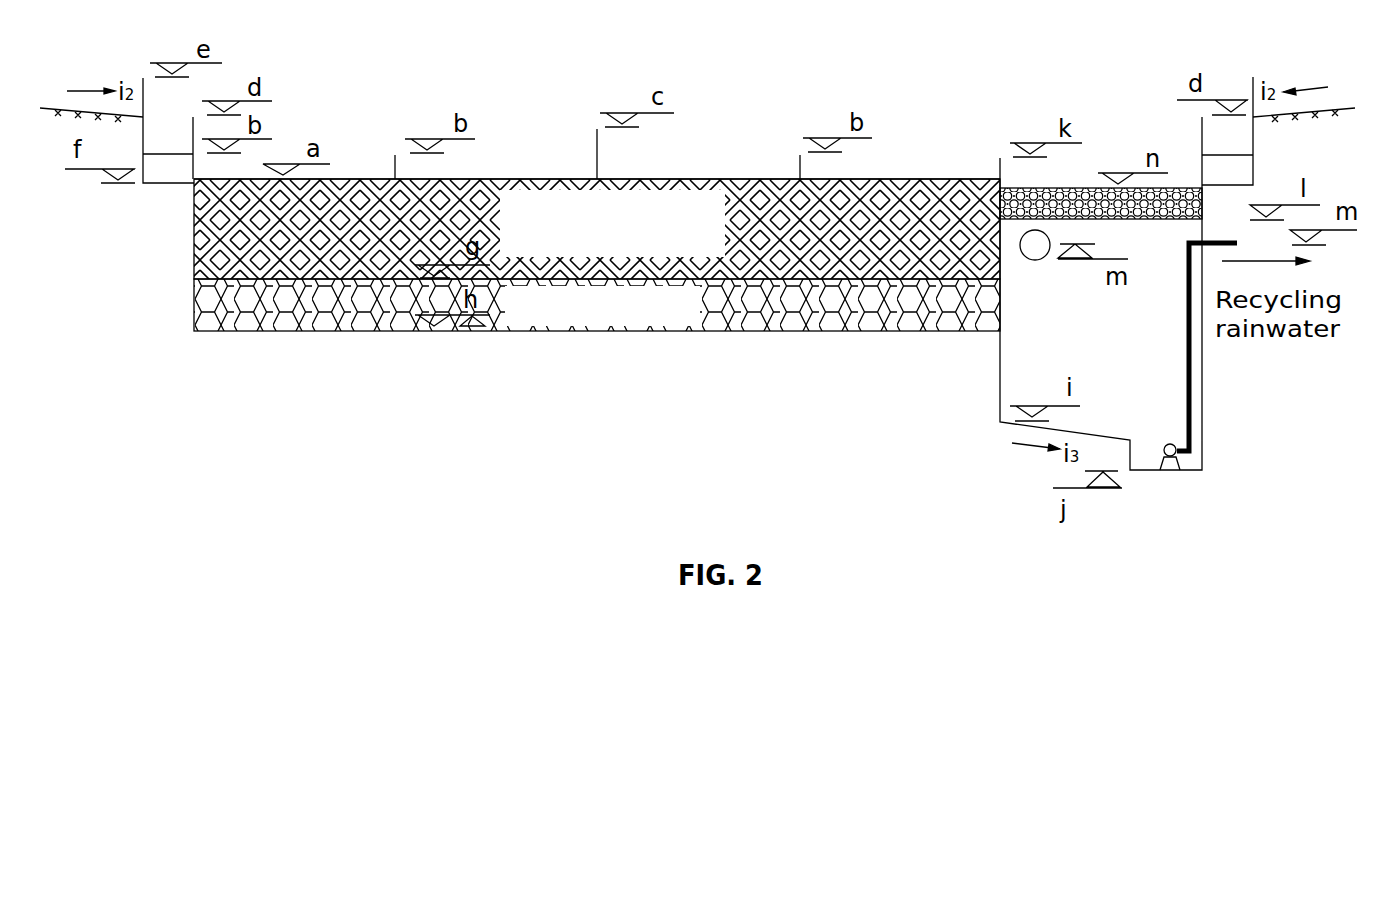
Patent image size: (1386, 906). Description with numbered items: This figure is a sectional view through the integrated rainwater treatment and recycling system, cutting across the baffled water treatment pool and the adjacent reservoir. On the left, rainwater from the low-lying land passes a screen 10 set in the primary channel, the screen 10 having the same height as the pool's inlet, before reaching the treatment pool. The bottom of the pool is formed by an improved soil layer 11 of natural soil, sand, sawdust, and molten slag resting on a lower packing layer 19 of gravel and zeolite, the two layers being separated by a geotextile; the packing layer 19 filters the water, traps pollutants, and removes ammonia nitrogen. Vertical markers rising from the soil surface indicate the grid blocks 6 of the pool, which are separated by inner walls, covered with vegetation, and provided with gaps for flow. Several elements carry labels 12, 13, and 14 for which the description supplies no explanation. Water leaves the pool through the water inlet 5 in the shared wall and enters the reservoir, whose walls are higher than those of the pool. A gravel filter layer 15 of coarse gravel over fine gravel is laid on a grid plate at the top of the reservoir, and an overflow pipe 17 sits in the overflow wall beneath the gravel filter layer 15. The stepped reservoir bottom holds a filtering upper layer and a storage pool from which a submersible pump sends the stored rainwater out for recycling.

The water inlet of the reservoir 5 is at (1000, 158).
The grid block 6 is at (660, 175).
The screen 10 is at (1230, 155).
The improved soil layer 11 is at (212, 235).
The water level observation pipe 12 is at (597, 140).
The monitoring well 13 is at (395, 155).
The outlet channel 14 is at (1200, 128).
The gravel filter layer 15 is at (1140, 222).
The overflow pipe 17 is at (1037, 260).
The packing layer 19 is at (200, 316).